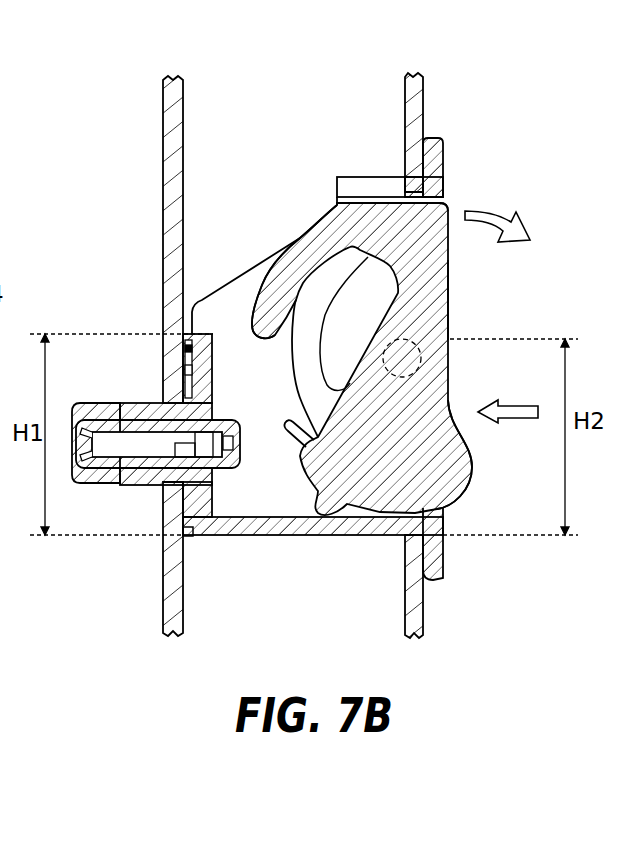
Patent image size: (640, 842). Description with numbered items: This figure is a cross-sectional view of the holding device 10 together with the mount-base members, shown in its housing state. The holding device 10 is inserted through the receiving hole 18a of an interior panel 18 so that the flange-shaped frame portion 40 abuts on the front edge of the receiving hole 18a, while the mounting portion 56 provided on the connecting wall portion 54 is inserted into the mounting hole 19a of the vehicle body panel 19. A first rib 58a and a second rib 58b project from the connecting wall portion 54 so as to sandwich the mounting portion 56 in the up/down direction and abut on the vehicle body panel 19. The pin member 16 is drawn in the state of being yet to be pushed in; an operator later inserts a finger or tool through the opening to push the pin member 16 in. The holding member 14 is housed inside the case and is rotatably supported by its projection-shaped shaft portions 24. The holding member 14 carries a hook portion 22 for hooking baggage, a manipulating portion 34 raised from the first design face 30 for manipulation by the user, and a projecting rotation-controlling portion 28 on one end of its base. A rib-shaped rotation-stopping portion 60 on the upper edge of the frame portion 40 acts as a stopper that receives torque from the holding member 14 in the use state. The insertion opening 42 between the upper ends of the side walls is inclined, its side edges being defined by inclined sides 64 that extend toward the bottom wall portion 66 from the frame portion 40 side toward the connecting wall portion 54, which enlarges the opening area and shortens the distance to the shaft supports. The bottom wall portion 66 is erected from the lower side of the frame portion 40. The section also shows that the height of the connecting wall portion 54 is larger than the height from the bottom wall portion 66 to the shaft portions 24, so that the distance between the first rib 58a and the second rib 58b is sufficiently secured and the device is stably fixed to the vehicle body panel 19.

The holding device 10 is at (458, 565).
The holding member 14 is at (455, 298).
The pin member 16 is at (128, 483).
The interior panel 18 is at (420, 100).
The receiving hole 18a is at (413, 175).
The vehicle body panel 19 is at (172, 112).
The mounting hole 19a is at (178, 488).
The hook portion 22 is at (306, 252).
The shaft portions 24 is at (421, 358).
The rotation-controlling portion 28 is at (330, 515).
The first design face 30 is at (450, 280).
The manipulating portion 34 is at (472, 470).
The frame portion 40 is at (443, 152).
The insertion opening 42 is at (262, 248).
The connecting wall portion 54 is at (202, 380).
The mounting portion 56 is at (92, 483).
The first rib 58a is at (186, 340).
The second rib 58b is at (190, 530).
The rotation-stopping portion 60 is at (452, 197).
The inclined sides 64 is at (238, 285).
The bottom wall portion 66 is at (288, 528).